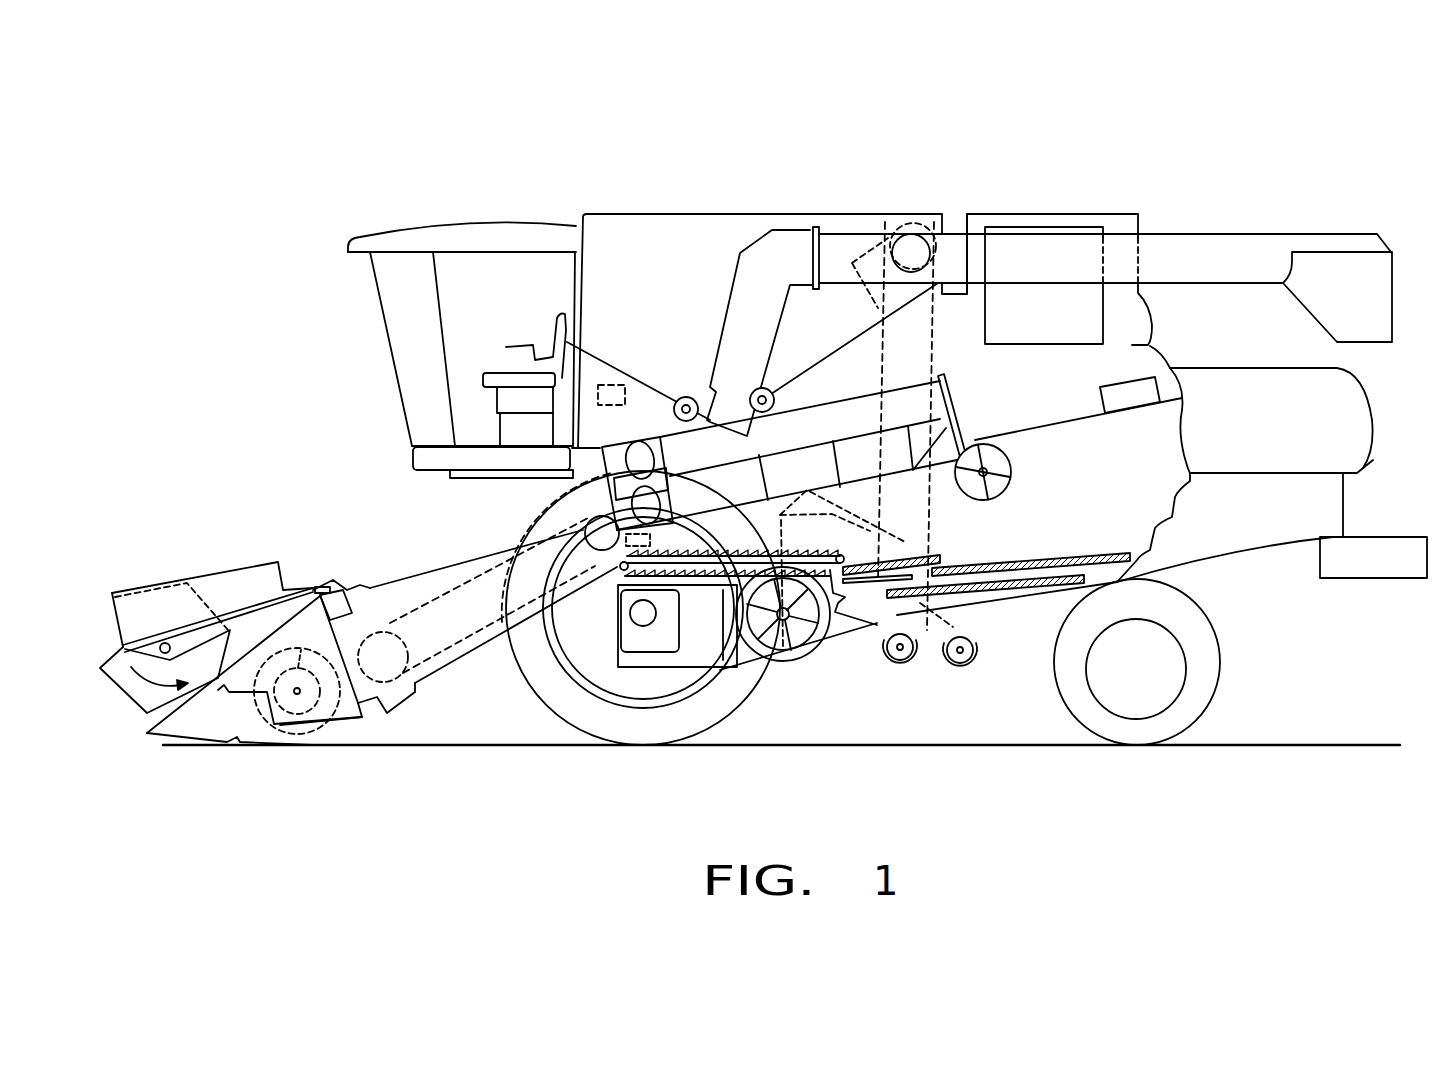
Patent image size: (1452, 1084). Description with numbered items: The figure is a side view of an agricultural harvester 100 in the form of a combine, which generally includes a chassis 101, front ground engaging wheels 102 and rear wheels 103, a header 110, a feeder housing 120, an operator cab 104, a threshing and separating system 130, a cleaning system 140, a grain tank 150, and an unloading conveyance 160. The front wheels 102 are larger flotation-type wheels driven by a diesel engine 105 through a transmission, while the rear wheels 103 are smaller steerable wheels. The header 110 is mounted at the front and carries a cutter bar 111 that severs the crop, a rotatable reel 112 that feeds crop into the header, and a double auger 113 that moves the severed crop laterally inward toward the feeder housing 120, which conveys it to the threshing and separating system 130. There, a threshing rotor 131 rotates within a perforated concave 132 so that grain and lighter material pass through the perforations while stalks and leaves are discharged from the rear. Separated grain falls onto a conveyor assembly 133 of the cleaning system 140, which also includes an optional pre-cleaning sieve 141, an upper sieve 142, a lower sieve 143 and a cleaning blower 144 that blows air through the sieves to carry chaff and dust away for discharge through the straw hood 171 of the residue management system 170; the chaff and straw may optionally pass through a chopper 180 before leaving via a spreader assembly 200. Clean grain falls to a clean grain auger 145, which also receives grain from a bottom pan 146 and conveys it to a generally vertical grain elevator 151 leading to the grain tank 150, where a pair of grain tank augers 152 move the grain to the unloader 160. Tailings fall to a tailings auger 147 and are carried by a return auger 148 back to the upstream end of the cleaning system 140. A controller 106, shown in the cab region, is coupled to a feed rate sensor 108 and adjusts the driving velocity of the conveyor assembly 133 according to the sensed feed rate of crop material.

The agricultural harvester 100 is at (452, 202).
The chassis 101 is at (1140, 575).
The front wheels 102 is at (540, 700).
The rear wheels 103 is at (1215, 683).
The operator cab 104 is at (381, 345).
The diesel engine 105 is at (1032, 230).
The controller 106 is at (614, 384).
The feed rate sensor 108 is at (665, 546).
The header 110 is at (206, 562).
The cutter bar 111 is at (214, 740).
The rotatable reel 112 is at (108, 635).
The double auger 113 is at (297, 720).
The feeder housing 120 is at (430, 568).
The threshing and separating system 130 is at (553, 497).
The threshing rotor 131 is at (627, 452).
The perforated concave 132 is at (812, 432).
The conveyor assembly 133 is at (623, 568).
The cleaning system 140 is at (838, 678).
The pre-cleaning sieve 141 is at (935, 561).
The upper sieve 142 is at (1038, 561).
The lower sieve 143 is at (1045, 605).
The cleaning blower 144 is at (790, 655).
The clean grain auger 145 is at (900, 652).
The bottom pan 146 is at (1050, 603).
The tailings auger 147 is at (960, 668).
The return auger 148 is at (866, 532).
The grain tank 150 is at (635, 222).
The grain elevator 151 is at (935, 352).
The grain tank augers 152 is at (683, 397).
The unloading conveyance 160 is at (1237, 242).
The residue management system 170 is at (1315, 598).
The straw hood 171 is at (1352, 412).
The chopper 180 is at (1100, 402).
The spreader assembly 200 is at (1398, 528).